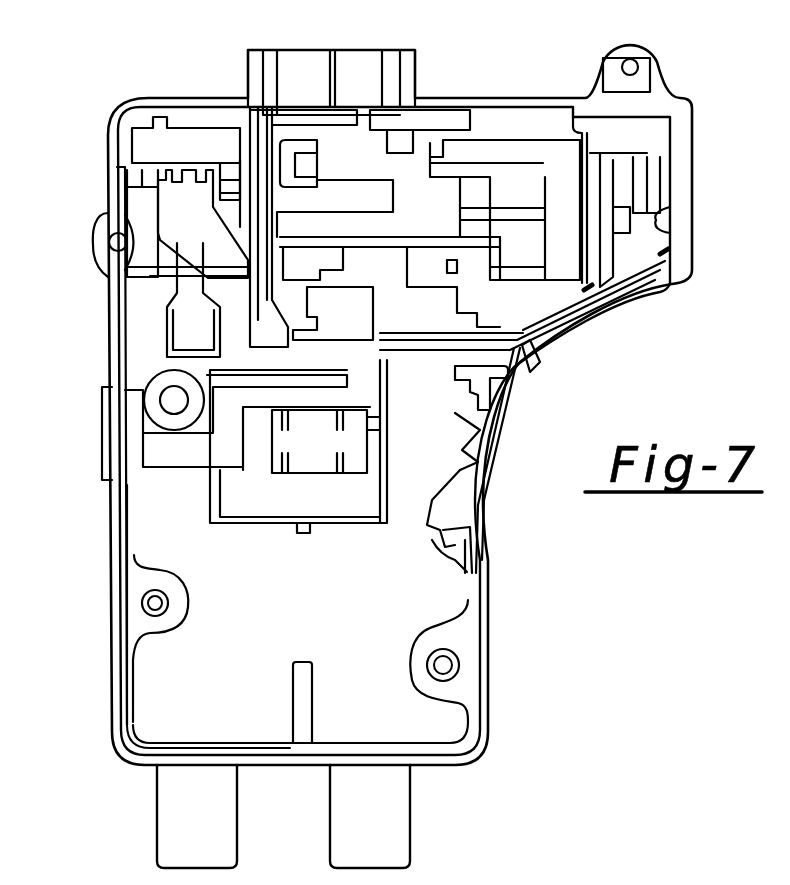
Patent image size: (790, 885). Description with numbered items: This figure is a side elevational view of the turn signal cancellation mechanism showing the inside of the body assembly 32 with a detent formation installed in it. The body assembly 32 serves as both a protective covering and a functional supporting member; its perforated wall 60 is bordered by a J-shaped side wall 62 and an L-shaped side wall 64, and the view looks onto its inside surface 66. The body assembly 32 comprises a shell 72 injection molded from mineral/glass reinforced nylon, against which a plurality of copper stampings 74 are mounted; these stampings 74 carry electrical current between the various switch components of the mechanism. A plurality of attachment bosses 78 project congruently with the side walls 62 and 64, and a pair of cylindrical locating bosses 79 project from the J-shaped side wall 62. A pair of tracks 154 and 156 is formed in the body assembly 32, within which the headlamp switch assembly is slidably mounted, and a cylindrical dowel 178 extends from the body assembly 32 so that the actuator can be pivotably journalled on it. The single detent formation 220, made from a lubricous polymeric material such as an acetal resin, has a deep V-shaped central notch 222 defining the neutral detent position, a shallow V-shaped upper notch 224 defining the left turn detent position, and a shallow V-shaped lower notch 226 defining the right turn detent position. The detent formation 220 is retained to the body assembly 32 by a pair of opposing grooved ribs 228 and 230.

The body assembly 32 is at (488, 578).
The perforated wall 60 is at (147, 323).
The J-shaped side wall 62 is at (490, 723).
The L-shaped side wall 64 is at (113, 112).
The inside surface 66 is at (257, 638).
The shell 72 is at (170, 673).
The copper stampings 74 is at (200, 143).
The attachment bosses 78 is at (100, 240).
The cylindrical locating bosses 79 is at (203, 828).
The track 154 is at (317, 343).
The track 156 is at (302, 533).
The cylindrical dowel 178 is at (167, 398).
The detent formation 220 is at (477, 497).
The deep V-shaped central notch 222 is at (490, 440).
The shallow V-shaped upper notch 224 is at (490, 422).
The shallow V-shaped lower notch 226 is at (463, 537).
The grooved rib 228 is at (527, 368).
The grooved rib 230 is at (443, 548).